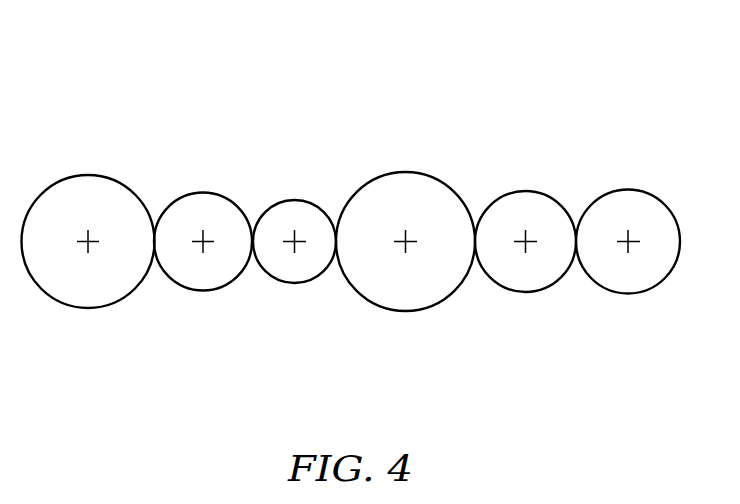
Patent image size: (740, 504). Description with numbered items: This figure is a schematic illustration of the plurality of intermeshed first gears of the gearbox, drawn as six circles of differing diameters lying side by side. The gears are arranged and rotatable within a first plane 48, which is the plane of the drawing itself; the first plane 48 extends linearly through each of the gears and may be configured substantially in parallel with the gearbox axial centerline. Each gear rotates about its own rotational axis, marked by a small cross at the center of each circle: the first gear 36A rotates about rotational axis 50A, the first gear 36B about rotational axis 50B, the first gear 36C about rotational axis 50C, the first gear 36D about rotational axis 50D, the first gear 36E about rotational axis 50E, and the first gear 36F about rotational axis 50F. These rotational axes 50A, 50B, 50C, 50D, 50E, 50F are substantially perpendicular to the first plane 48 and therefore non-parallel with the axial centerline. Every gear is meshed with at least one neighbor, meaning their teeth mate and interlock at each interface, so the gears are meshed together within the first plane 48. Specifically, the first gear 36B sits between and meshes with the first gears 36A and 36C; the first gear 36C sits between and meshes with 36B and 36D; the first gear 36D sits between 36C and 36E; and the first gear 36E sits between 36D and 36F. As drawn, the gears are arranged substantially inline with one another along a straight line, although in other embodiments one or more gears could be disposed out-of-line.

The first plane 48 is at (73, 43).
The first gear 36A is at (83, 308).
The first gear 36B is at (209, 290).
The first gear 36C is at (297, 284).
The first gear 36D is at (405, 312).
The first gear 36E is at (525, 293).
The first gear 36F is at (637, 295).
The rotational axis 50A is at (88, 237).
The rotational axis 50B is at (203, 237).
The rotational axis 50C is at (294, 238).
The rotational axis 50D is at (405, 237).
The rotational axis 50E is at (526, 238).
The rotational axis 50F is at (628, 238).